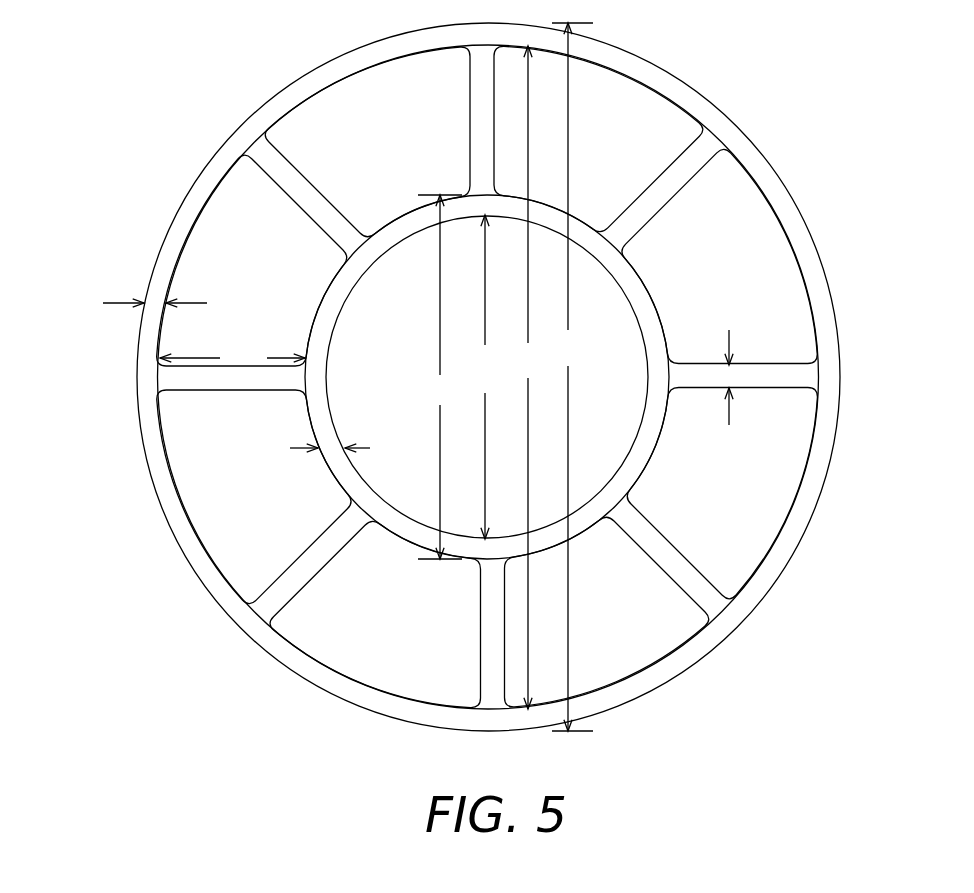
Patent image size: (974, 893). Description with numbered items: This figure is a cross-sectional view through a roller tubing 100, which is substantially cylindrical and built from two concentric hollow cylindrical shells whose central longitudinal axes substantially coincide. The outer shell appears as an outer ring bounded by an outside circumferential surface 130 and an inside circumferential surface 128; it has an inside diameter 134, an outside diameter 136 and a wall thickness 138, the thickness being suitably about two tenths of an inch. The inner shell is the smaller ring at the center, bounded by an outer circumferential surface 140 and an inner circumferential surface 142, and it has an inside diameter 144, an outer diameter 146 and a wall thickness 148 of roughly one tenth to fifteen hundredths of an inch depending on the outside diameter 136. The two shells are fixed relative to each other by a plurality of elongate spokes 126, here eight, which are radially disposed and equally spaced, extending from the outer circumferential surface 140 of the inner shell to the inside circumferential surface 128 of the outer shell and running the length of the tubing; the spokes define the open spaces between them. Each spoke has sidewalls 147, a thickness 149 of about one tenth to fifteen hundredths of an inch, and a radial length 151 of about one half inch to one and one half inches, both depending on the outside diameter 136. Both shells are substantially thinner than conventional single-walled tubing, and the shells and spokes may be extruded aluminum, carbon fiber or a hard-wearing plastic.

The roller tubing 100 is at (789, 163).
The spokes 126 is at (487, 404).
The inside circumferential surface 128 is at (805, 282).
The outside circumferential surface 130 is at (840, 375).
The inside diameter 134 is at (525, 377).
The outside diameter 136 is at (572, 377).
The wall thickness 138 is at (175, 305).
The outer circumferential surface 140 is at (652, 292).
The inner circumferential surface 142 is at (642, 427).
The inside diameter 144 is at (485, 377).
The outer diameter 146 is at (440, 377).
The sidewalls 147 is at (708, 575).
The wall thickness 148 is at (309, 452).
The thickness 149 is at (725, 362).
The length 151 is at (232, 356).